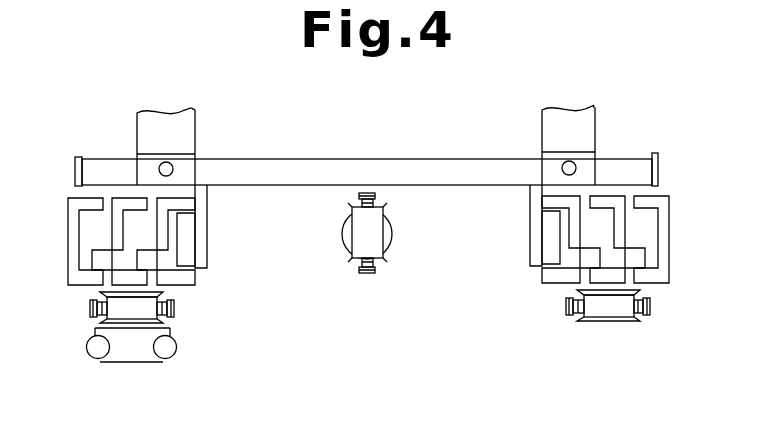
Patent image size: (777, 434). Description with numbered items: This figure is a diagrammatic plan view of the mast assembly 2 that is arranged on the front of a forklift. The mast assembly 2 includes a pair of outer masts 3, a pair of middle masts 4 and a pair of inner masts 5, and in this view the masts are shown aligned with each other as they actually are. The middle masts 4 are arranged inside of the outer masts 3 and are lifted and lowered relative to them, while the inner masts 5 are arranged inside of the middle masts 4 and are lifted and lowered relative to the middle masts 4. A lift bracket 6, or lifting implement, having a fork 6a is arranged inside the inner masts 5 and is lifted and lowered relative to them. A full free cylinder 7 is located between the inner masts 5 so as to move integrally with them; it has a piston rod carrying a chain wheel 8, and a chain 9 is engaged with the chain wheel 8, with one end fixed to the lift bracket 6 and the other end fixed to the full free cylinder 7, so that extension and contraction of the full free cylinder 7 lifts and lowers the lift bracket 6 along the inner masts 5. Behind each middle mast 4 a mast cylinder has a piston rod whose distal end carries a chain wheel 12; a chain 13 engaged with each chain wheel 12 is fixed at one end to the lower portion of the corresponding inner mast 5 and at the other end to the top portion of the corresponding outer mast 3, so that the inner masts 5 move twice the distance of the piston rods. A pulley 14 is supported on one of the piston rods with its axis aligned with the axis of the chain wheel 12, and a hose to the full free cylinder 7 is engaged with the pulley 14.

The mast assembly 2 is at (674, 150).
The outer masts 3 is at (68, 262).
The middle masts 4 is at (113, 226).
The inner masts 5 is at (195, 276).
The lift bracket 6 is at (403, 160).
The fork 6a is at (195, 128).
The full free cylinder 7 is at (393, 228).
The chain wheel 8 is at (384, 240).
The chain 9 is at (359, 267).
The chain wheel 12 is at (125, 318).
The chain 13 is at (174, 306).
The pulley 14 is at (152, 357).